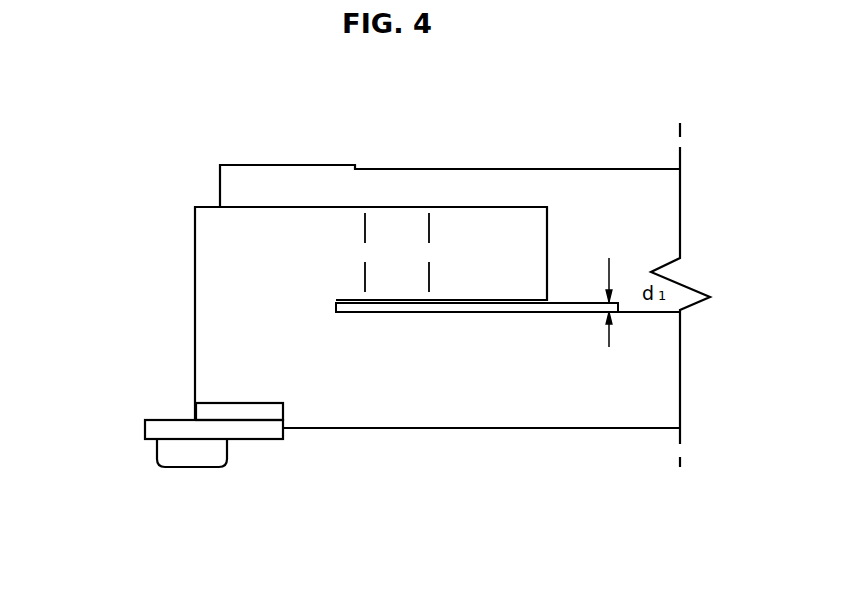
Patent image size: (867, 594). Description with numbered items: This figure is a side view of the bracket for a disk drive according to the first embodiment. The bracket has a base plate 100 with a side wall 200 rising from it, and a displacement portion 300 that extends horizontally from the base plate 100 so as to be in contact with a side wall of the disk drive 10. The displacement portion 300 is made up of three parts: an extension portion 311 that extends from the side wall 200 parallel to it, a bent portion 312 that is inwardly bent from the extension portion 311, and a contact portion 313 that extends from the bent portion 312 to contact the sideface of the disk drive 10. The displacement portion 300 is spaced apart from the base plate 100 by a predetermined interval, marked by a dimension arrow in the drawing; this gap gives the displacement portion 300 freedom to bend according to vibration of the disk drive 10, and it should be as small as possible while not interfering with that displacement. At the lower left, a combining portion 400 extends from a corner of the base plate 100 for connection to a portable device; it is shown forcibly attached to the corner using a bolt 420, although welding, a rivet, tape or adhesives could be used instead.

The disk drive 10 is at (273, 180).
The base plate 100 is at (527, 385).
The side wall 200 is at (212, 240).
The displacement portion 300 is at (486, 200).
The extension portion 311 is at (353, 260).
The bent portion 312 is at (398, 257).
The contact portion 313 is at (483, 247).
The combining portion 400 is at (257, 435).
The bolt 420 is at (190, 460).